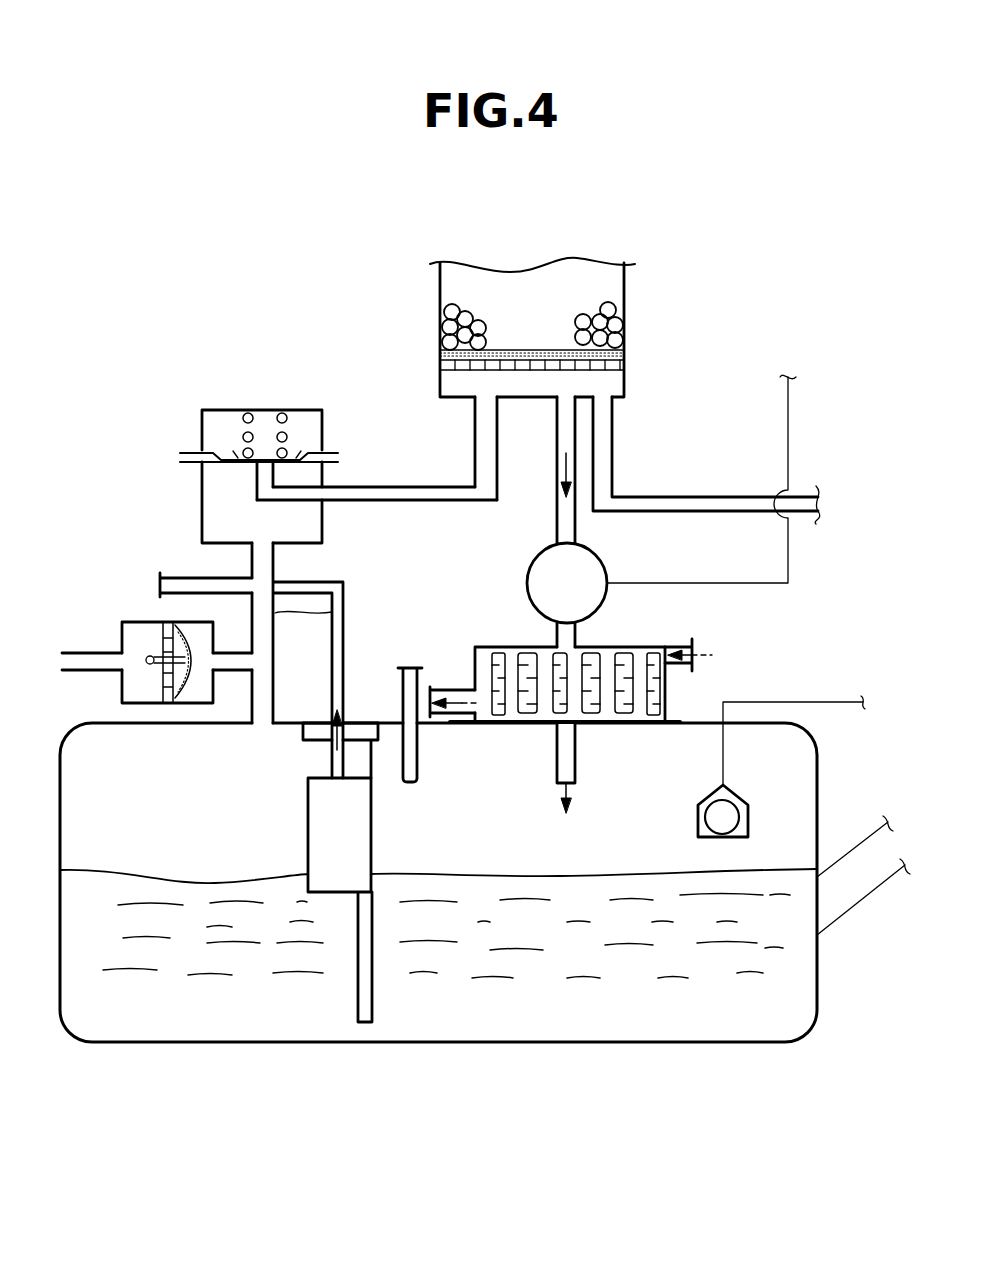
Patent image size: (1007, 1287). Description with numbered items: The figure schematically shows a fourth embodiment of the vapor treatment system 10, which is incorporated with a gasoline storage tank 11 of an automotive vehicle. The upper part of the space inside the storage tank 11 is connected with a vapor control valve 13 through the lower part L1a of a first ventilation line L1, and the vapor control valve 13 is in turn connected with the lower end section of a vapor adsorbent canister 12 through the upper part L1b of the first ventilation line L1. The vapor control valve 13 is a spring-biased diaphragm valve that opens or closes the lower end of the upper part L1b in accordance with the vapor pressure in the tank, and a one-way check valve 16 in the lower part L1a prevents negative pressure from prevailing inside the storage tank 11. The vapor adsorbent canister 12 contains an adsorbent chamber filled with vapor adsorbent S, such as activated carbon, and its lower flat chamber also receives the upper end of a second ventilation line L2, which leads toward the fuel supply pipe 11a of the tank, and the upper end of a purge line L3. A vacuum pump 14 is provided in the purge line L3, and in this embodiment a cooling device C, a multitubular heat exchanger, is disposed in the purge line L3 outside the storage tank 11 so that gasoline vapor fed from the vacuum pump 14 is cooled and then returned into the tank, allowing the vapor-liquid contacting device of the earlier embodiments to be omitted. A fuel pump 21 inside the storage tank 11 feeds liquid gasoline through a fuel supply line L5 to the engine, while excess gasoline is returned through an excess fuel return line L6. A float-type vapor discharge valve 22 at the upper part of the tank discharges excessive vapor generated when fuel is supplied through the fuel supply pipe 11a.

The vapor treatment system 10 is at (676, 229).
The gasoline storage tank 11 is at (612, 1030).
The fuel supply pipe 11a is at (868, 850).
The vapor adsorbent canister 12 is at (626, 294).
The vapor adsorbent S is at (443, 333).
The vapor control valve 13 is at (202, 490).
The vacuum pump 14 is at (528, 572).
The one-way check valve 16 is at (138, 637).
The fuel pump 21 is at (323, 817).
The vapor discharge valve 22 is at (732, 790).
The cooling device C is at (630, 646).
The first ventilation line L1 is at (360, 477).
The lower part of the first ventilation line L1a is at (334, 613).
The upper part of the first ventilation line L1b is at (402, 480).
The second ventilation line L2 is at (695, 497).
The purge line L3 is at (557, 490).
The fuel supply line L5 is at (183, 578).
The excess fuel return line L6 is at (423, 683).